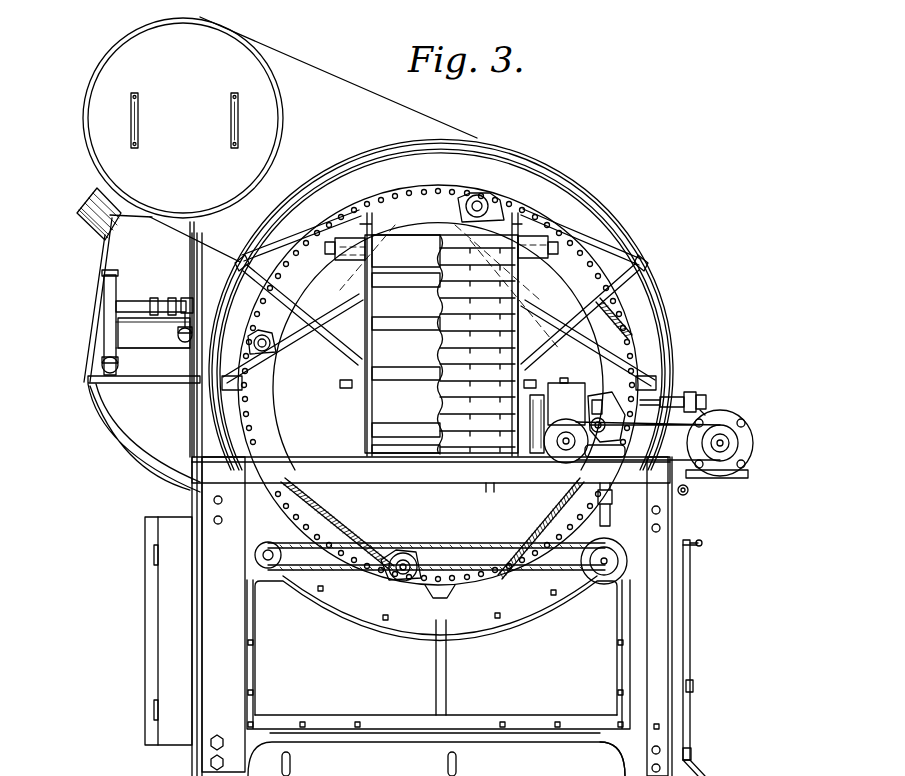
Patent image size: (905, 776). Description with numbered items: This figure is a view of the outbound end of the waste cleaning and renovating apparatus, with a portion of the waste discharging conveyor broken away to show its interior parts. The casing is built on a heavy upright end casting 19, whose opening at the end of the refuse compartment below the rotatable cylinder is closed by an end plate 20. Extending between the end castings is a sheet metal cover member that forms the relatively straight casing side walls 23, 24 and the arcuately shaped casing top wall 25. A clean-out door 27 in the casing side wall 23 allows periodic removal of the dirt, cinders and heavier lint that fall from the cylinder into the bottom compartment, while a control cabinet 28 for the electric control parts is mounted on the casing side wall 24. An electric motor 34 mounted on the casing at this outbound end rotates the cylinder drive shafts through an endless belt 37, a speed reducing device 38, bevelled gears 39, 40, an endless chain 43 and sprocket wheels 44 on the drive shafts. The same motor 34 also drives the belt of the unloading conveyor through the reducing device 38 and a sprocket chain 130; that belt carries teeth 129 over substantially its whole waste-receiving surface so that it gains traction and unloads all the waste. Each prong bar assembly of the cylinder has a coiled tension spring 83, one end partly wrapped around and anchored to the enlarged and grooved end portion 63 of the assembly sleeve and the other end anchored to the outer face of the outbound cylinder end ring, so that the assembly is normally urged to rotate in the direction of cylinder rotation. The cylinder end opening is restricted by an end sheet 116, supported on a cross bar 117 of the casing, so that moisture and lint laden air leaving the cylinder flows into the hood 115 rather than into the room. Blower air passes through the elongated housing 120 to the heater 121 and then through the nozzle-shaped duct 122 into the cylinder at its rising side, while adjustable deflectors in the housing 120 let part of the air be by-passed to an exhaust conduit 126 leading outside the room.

The hood 115 is at (95, 128).
The exhaust conduit 126 is at (82, 218).
The elongated housing 120 is at (112, 268).
The heater 121 is at (125, 357).
The duct 122 is at (118, 420).
The casing top wall 25 is at (517, 160).
The coiled tension spring 83 is at (628, 327).
The teeth 129 is at (468, 320).
The end sheets 116 is at (435, 497).
The cross bar 117 is at (487, 481).
The sprocket chain 130 is at (543, 400).
The speed reducing device 38 is at (573, 392).
The bevelled gear 39 is at (600, 410).
The endless belt 37 is at (626, 412).
The bevelled gear 40 is at (625, 432).
The electric motor 34 is at (722, 413).
The enlarged and grooved outer end portion 63 is at (404, 555).
The sprocket wheel 44 is at (272, 562).
The endless chain 43 is at (348, 572).
The end plate 20 is at (468, 642).
The casing side wall 23 is at (670, 510).
The clean-out door 27 is at (680, 632).
The control cabinet 28 is at (160, 590).
The casing side wall 24 is at (196, 612).
The end casting 19 is at (623, 764).